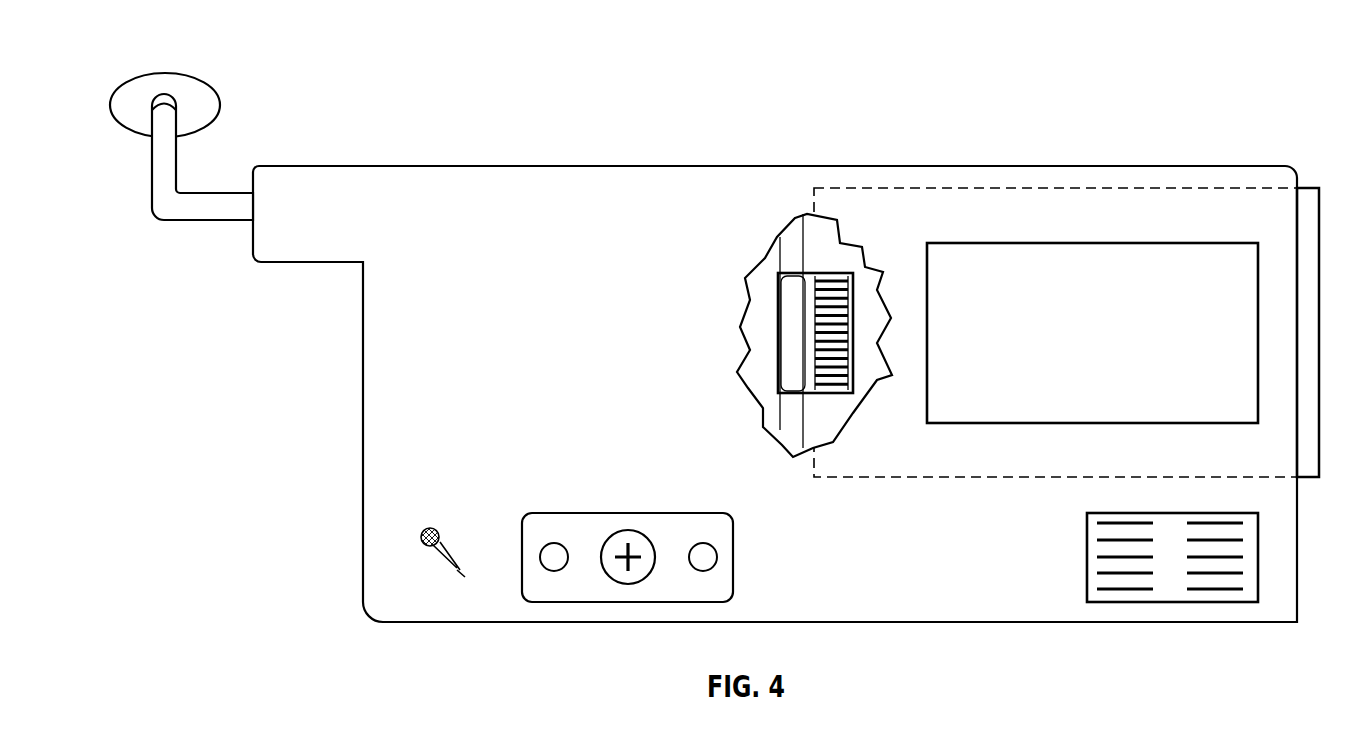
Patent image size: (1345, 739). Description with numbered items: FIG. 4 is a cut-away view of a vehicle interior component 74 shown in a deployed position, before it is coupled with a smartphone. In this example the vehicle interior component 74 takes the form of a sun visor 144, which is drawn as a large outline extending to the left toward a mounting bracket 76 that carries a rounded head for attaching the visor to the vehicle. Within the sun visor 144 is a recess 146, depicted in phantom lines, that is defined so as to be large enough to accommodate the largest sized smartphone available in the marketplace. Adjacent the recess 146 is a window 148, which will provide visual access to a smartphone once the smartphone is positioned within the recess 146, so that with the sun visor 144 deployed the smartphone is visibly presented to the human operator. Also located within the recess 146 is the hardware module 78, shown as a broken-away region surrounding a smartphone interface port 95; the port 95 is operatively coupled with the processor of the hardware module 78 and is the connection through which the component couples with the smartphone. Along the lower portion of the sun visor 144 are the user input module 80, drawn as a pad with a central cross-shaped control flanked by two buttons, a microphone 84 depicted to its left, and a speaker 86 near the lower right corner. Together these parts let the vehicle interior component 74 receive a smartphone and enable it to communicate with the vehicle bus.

The vehicle interior component 74 is at (345, 72).
The mounting bracket 76 is at (157, 217).
The hardware module 78 is at (760, 308).
The user input module 80 is at (630, 513).
The microphone 84 is at (436, 528).
The speaker 86 is at (1087, 579).
The smartphone interface port 95 is at (823, 273).
The sun visor 144 is at (600, 165).
The recess 146 is at (965, 478).
The window 148 is at (1067, 262).